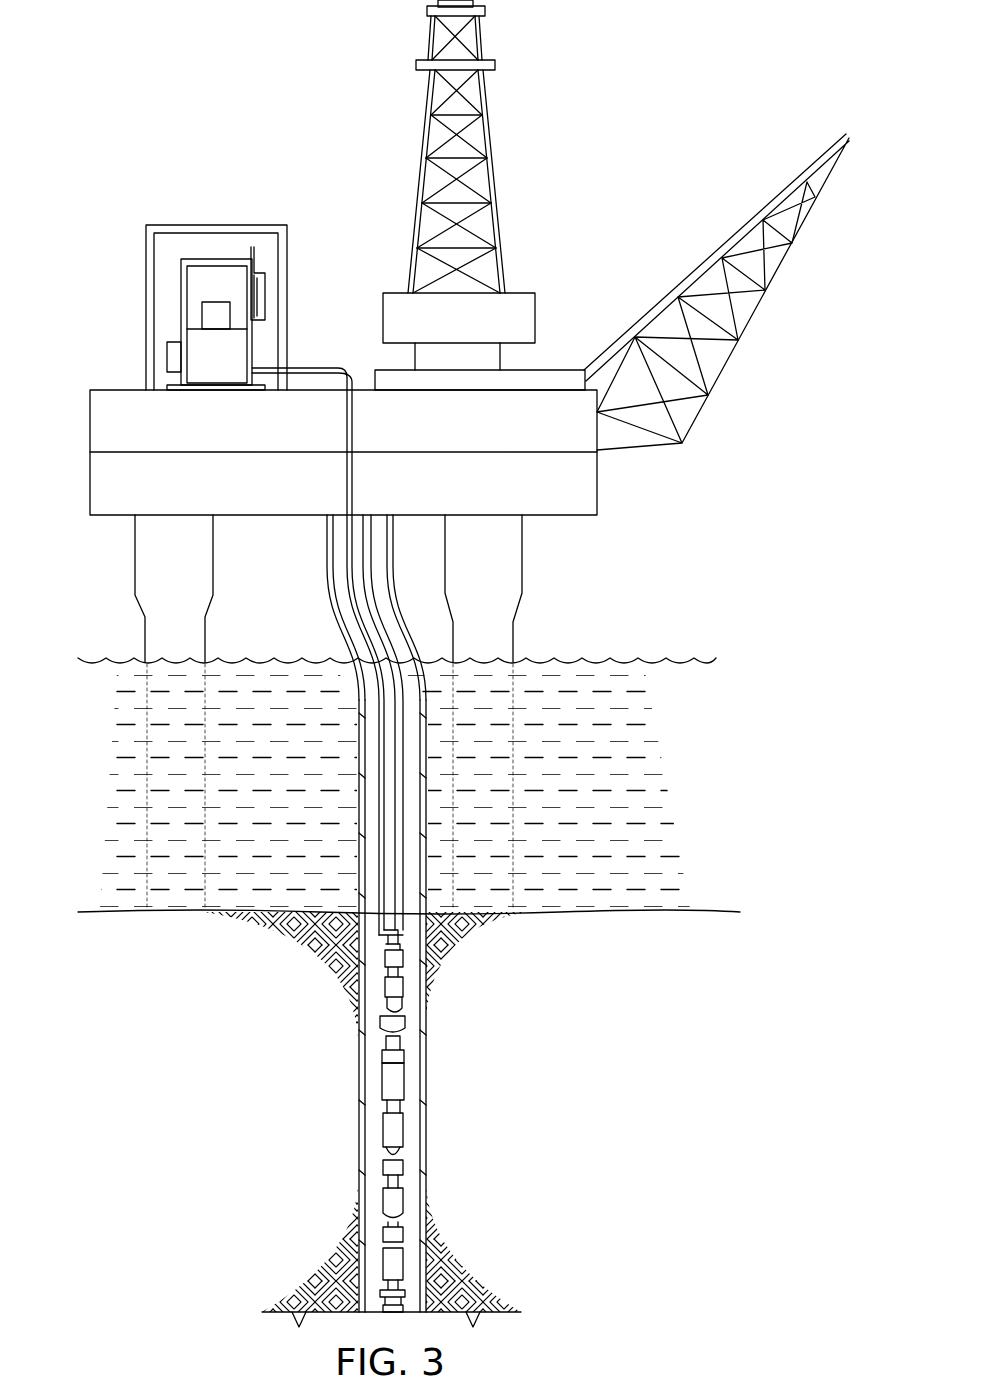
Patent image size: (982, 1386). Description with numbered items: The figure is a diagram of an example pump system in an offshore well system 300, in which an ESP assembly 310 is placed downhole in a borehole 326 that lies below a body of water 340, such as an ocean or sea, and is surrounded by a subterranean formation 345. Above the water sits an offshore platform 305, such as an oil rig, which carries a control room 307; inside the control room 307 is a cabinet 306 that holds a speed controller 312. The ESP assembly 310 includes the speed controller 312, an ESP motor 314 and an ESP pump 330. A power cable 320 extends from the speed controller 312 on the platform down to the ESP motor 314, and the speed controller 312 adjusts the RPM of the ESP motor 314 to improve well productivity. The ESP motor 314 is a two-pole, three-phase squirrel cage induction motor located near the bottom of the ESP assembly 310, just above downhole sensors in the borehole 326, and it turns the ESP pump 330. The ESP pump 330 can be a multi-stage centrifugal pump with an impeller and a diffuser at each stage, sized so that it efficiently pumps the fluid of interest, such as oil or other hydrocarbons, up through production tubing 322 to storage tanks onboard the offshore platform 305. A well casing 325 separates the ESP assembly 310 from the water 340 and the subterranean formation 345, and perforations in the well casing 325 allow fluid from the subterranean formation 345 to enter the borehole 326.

The offshore well system 300 is at (226, 86).
The offshore platform 305 is at (598, 482).
The cabinet 306 is at (181, 295).
The control room 307 is at (216, 226).
The ESP assembly 310 is at (428, 1105).
The speed controller 312 is at (202, 320).
The ESP motor 314 is at (379, 1270).
The power cable 320 is at (348, 552).
The production tubing 322 is at (393, 530).
The well casing 325 is at (338, 632).
The borehole 326 is at (374, 1148).
The ESP pump 330 is at (386, 1083).
The body of water 340 is at (602, 776).
The subterranean formation 345 is at (217, 1039).